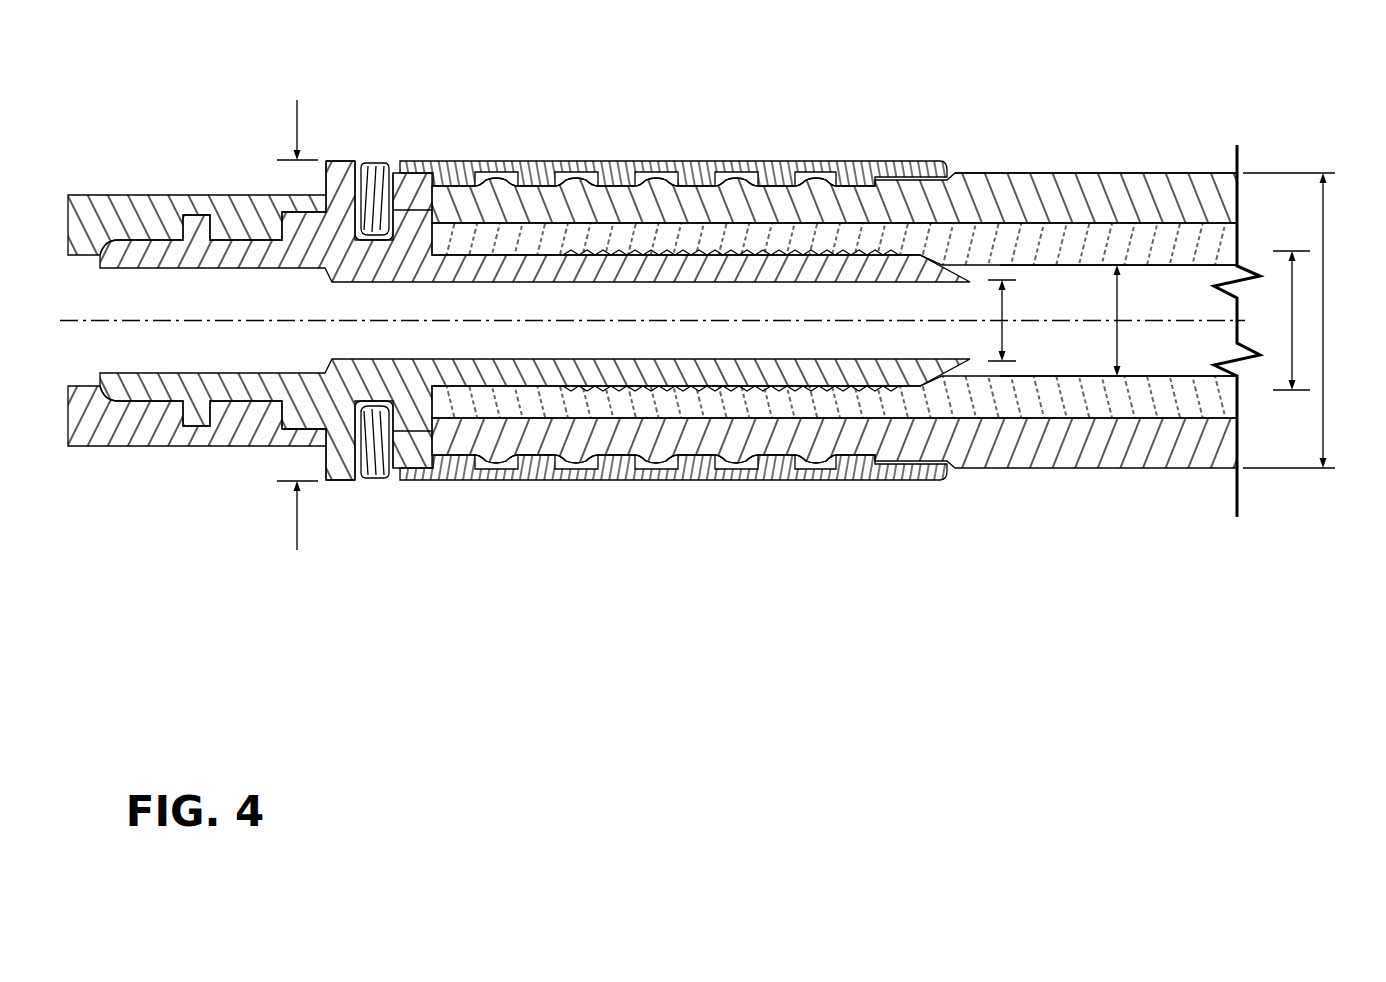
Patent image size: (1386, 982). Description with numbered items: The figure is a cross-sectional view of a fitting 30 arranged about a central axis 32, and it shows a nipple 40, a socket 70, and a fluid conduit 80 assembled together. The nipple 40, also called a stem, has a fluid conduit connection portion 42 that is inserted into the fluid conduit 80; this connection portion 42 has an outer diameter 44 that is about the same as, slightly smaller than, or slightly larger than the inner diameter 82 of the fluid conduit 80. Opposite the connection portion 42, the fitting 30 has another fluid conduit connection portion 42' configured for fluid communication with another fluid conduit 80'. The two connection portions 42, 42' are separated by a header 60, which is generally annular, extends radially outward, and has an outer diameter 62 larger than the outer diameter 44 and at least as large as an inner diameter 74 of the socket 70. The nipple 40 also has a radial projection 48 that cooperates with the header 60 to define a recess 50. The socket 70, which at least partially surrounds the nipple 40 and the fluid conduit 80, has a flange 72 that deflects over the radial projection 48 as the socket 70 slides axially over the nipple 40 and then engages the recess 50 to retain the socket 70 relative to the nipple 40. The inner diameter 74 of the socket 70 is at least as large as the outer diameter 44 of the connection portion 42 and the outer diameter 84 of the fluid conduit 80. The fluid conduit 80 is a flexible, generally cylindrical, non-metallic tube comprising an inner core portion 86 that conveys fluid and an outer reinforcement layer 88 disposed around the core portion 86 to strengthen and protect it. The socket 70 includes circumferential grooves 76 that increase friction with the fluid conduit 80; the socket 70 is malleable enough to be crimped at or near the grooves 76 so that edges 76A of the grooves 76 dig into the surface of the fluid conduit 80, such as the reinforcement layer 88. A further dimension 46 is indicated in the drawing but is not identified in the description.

The fitting 30 is at (233, 124).
The central axis 32 is at (68, 336).
The nipple 40 is at (205, 182).
The fluid conduit connection portion 42 is at (668, 351).
The fluid conduit connection portion 42' is at (535, 233).
The outer diameter 44 is at (1292, 330).
The bore diameter 46 is at (1008, 332).
The radial projection 48 is at (410, 182).
The recess 50 is at (353, 407).
The header 60 is at (338, 160).
The outer diameter 62 is at (280, 338).
The socket 70 is at (533, 160).
The flange 72 is at (375, 218).
The inner diameter 74 is at (375, 420).
The grooves 76 is at (487, 160).
The edges 76A is at (487, 474).
The fluid conduit 80 is at (1276, 320).
The fluid conduit 80' is at (197, 196).
The inner diameter 82 is at (1120, 302).
The outer diameter 84 is at (1324, 300).
The inner core portion 86 is at (1225, 247).
The outer reinforcement layer 88 is at (1143, 190).